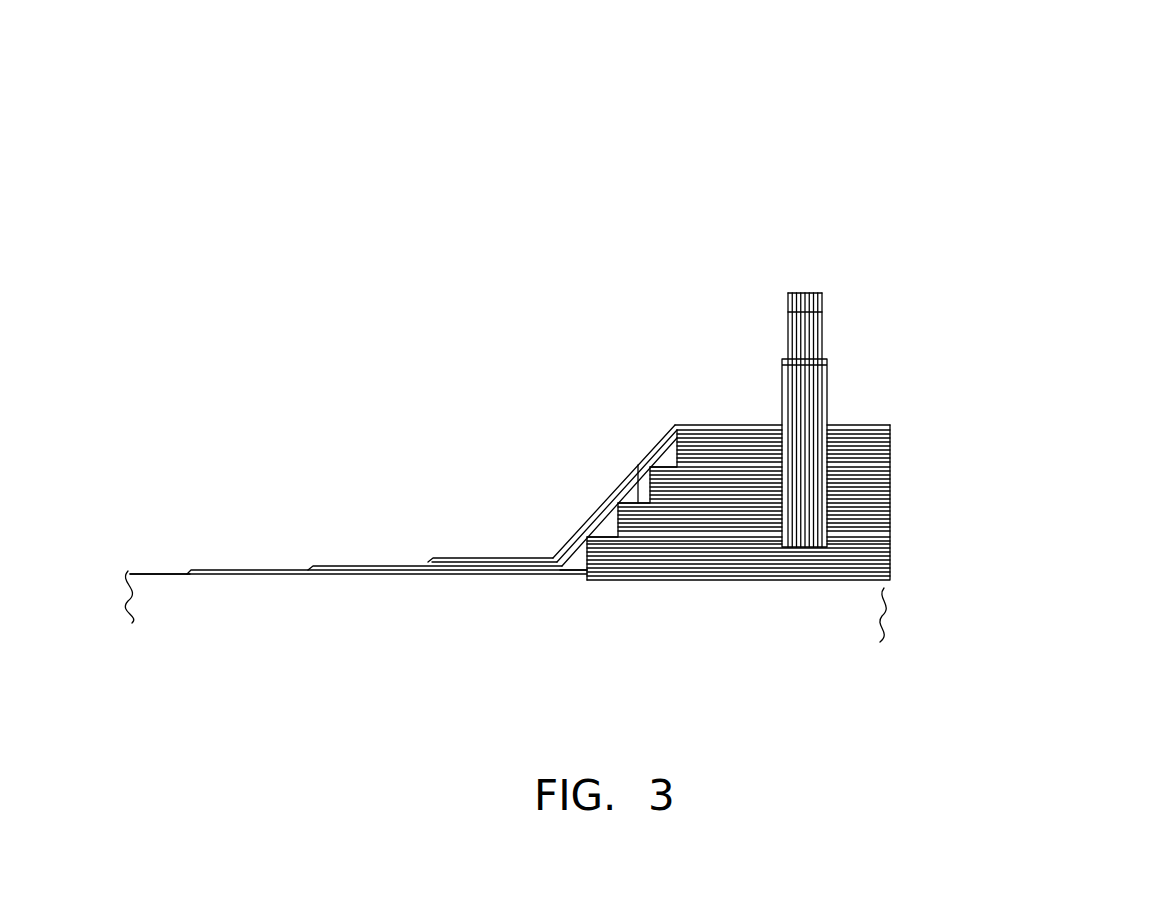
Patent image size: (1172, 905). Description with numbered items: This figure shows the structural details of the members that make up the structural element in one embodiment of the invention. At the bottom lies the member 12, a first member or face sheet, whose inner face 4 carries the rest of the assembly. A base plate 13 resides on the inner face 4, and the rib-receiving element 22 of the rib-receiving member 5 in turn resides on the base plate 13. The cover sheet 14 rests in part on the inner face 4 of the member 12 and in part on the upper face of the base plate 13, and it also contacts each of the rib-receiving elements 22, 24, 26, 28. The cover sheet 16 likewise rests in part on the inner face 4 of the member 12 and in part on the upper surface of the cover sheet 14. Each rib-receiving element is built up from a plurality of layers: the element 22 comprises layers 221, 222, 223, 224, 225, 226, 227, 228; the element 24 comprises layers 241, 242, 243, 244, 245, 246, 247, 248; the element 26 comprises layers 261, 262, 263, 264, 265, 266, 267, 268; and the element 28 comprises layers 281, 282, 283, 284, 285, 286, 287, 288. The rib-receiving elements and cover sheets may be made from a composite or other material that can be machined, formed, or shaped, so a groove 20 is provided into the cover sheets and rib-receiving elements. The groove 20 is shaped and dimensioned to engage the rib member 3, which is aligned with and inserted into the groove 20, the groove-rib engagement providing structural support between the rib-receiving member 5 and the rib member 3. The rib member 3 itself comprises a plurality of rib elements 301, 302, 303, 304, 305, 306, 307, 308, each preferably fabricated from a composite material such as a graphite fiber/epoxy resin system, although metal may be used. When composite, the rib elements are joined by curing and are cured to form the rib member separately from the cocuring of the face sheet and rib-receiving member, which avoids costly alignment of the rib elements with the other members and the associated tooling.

The rib member 3 is at (847, 304).
The inner face 4 is at (178, 568).
The rib-receiving member 5 is at (714, 425).
The member 12 is at (160, 574).
The base plate 13 is at (485, 576).
The cover sheet 14 is at (358, 574).
The cover sheet 16 is at (263, 565).
The groove 20 is at (779, 462).
The rib-receiving element 22 is at (582, 560).
The rib-receiving element 24 is at (615, 463).
The rib-receiving element 26 is at (658, 437).
The rib-receiving element 28 is at (669, 424).
The layer 221 is at (891, 581).
The layer 222 is at (891, 576).
The layer 223 is at (891, 571).
The layer 224 is at (891, 566).
The layer 225 is at (891, 561).
The layer 226 is at (891, 556).
The layer 227 is at (891, 551).
The layer 228 is at (891, 546).
The layer 241 is at (592, 528).
The layer 242 is at (596, 523).
The layer 243 is at (599, 519).
The layer 244 is at (602, 514).
The layer 245 is at (605, 510).
The layer 246 is at (608, 506).
The layer 247 is at (611, 501).
The layer 248 is at (614, 496).
The layer 261 is at (891, 504).
The layer 262 is at (891, 498).
The layer 263 is at (891, 492).
The layer 264 is at (891, 486).
The layer 265 is at (891, 480).
The layer 266 is at (891, 474).
The layer 267 is at (891, 468).
The layer 268 is at (891, 462).
The layer 281 is at (891, 457).
The layer 282 is at (891, 452).
The layer 283 is at (891, 448).
The layer 284 is at (891, 444).
The layer 285 is at (891, 440).
The layer 286 is at (891, 436).
The layer 287 is at (891, 432).
The layer 288 is at (891, 428).
The rib element 301 is at (818, 293).
The rib element 302 is at (814, 293).
The rib element 303 is at (810, 293).
The rib element 304 is at (806, 293).
The rib element 305 is at (802, 293).
The rib element 306 is at (798, 293).
The rib element 307 is at (794, 293).
The rib element 308 is at (790, 293).